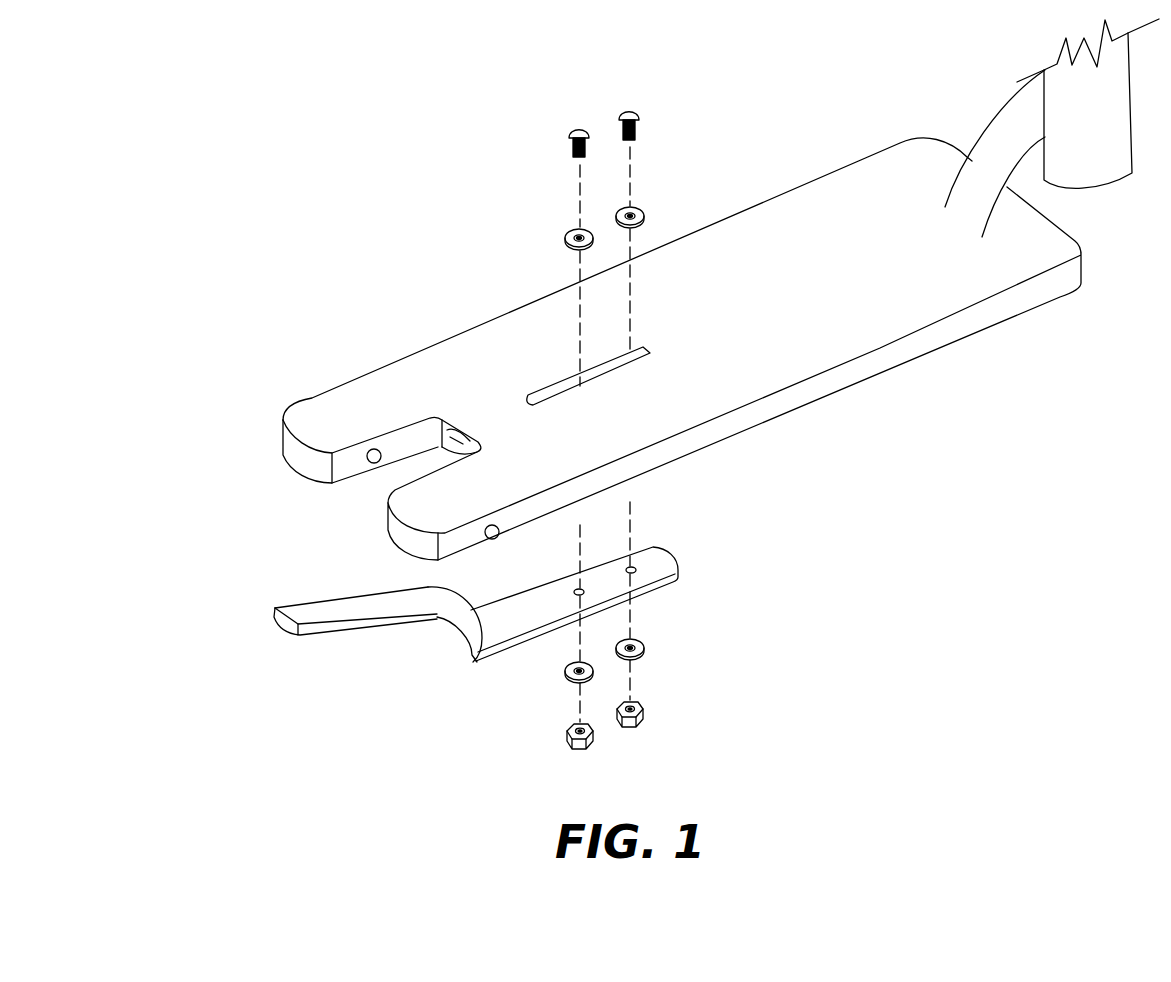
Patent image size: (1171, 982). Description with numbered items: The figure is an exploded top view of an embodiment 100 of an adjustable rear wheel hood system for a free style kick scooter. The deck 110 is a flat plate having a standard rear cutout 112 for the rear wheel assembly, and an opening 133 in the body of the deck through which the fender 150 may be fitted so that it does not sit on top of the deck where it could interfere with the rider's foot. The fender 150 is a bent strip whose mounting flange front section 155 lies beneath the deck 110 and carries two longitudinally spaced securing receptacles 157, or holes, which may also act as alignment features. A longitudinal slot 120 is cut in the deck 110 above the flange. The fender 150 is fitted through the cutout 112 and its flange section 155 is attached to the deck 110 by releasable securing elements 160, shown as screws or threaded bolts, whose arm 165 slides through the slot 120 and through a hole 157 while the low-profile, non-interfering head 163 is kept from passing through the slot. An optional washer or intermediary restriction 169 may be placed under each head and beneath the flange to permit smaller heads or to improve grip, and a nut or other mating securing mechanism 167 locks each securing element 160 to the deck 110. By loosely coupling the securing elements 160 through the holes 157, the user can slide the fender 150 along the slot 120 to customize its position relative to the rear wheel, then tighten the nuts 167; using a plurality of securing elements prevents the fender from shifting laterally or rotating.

The embodiment of adjustable rear wheel hood system 100 is at (174, 89).
The deck 110 is at (895, 288).
The rear cutout 112 is at (358, 499).
The longitudinal slot 120 is at (650, 353).
The opening 133 is at (455, 424).
The fender 150 is at (360, 647).
The mounting flange front section 155 is at (493, 618).
The securing receptacles 157 is at (582, 588).
The securing elements 160 is at (653, 162).
The head 163 is at (623, 112).
The arm 165 is at (571, 145).
The nut 167 is at (623, 727).
The washer 169 is at (617, 217).